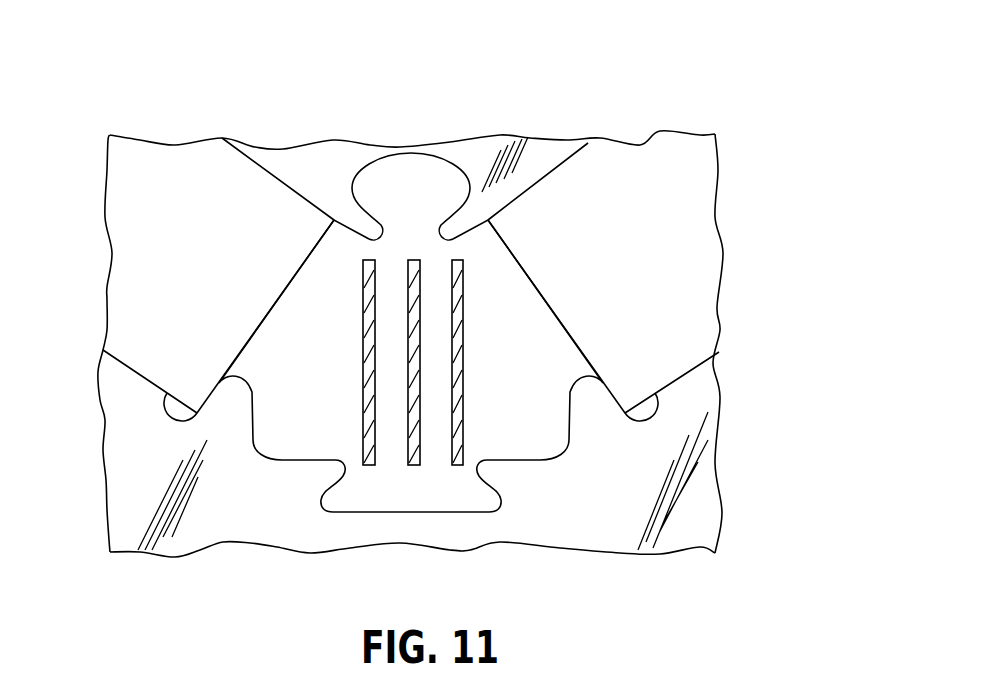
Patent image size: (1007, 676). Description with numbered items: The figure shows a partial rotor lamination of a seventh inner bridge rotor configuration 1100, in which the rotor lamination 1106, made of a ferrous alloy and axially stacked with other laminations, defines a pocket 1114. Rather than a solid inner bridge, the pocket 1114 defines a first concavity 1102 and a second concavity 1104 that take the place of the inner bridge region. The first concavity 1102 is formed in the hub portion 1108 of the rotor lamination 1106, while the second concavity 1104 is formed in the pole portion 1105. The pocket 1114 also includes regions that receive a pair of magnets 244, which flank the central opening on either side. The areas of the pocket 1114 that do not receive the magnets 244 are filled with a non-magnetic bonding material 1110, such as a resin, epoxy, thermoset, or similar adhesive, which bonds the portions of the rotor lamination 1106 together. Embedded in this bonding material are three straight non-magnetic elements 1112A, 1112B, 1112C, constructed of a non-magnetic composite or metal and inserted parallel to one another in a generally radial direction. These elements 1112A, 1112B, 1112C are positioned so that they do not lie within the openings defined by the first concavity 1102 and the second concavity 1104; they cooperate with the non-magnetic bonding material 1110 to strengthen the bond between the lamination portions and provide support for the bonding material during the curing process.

The seventh inner bridge rotor configuration 1100 is at (728, 108).
The magnets 244 is at (162, 247).
The first concavity 1102 is at (420, 355).
The second concavity 1104 is at (409, 190).
The pole portion 1105 is at (536, 168).
The rotor lamination 1106 is at (696, 509).
The hub portion 1108 is at (405, 528).
The non-magnetic bonding material 1110 is at (550, 347).
The non-magnetic element 1112A is at (363, 323).
The non-magnetic element 1112B is at (406, 280).
The non-magnetic element 1112C is at (463, 323).
The pocket 1114 is at (322, 463).